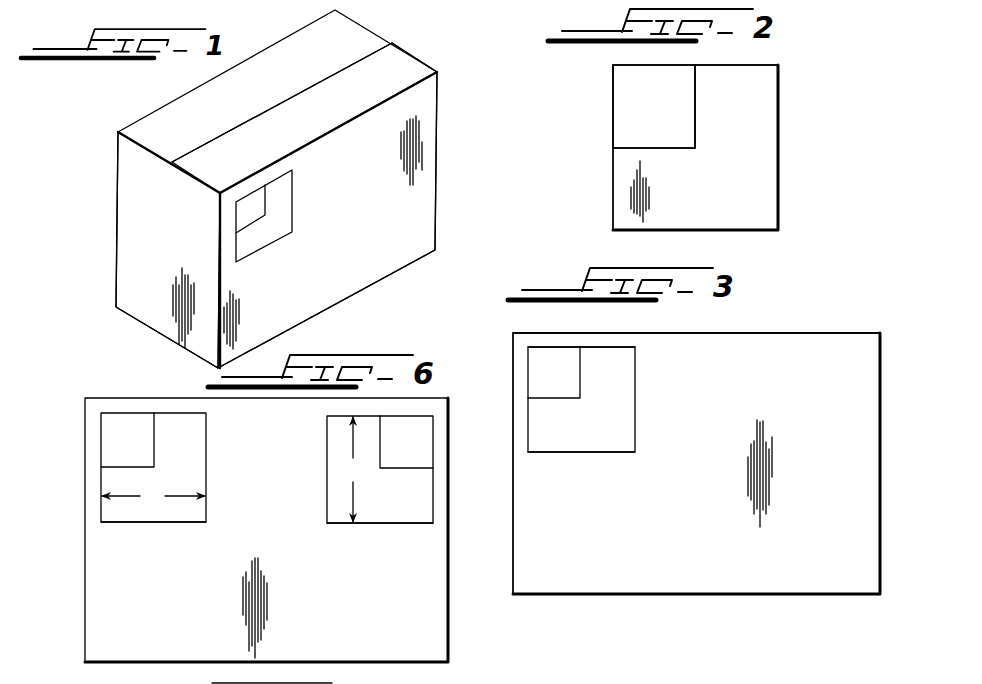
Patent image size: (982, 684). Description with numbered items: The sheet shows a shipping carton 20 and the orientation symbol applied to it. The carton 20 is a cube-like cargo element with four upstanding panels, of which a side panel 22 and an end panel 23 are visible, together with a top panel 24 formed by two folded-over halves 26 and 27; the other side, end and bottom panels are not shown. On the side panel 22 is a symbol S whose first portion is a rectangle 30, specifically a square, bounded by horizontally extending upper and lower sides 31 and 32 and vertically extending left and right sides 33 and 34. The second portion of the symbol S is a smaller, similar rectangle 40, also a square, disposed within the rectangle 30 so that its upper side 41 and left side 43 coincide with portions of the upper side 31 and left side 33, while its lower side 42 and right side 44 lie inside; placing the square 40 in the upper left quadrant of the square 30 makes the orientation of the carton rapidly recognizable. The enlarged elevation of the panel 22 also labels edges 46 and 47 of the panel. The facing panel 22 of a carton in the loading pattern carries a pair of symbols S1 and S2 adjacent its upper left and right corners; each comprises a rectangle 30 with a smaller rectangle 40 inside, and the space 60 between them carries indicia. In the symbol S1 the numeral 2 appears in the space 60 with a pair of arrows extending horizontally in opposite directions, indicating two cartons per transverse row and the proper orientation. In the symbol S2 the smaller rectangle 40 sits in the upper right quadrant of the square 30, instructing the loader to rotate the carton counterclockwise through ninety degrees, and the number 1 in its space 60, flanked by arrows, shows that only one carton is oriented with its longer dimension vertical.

In FIG. 1, the carton 20 is at (463, 101).
In FIG. 3, the carton 20 is at (850, 331).
In FIG. 1, the side panel 22 is at (396, 258).
In FIG. 3, the side panel 22 is at (849, 462).
In FIG. 6, the side panel 22 is at (399, 632).
In FIG. 1, the end panel 23 is at (175, 254).
In FIG. 1, the top panel 24 is at (347, 108).
In FIG. 1, the folded-over half 26 is at (403, 63).
In FIG. 1, the folded-over half 27 is at (356, 30).
In FIG. 1, the rectangle 30 is at (267, 250).
In FIG. 2, the rectangle 30 is at (781, 204).
In FIG. 3, the rectangle 30 is at (581, 399).
In FIG. 6, the rectangle 30 is at (208, 485).
In FIG. 2, the upper side 31 is at (712, 65).
In FIG. 3, the upper side 31 is at (604, 348).
In FIG. 2, the lower side 32 is at (713, 232).
In FIG. 3, the lower side 32 is at (572, 452).
In FIG. 2, the left side 33 is at (613, 190).
In FIG. 2, the right side 34 is at (780, 151).
In FIG. 1, the rectangle 40 is at (268, 221).
In FIG. 2, the rectangle 40 is at (666, 152).
In FIG. 3, the rectangle 40 is at (570, 402).
In FIG. 6, the rectangle 40 is at (158, 448).
In FIG. 2, the upper side 41 is at (660, 72).
In FIG. 2, the lower side 42 is at (648, 148).
In FIG. 2, the left side 43 is at (613, 116).
In FIG. 2, the right side 44 is at (696, 129).
In FIG. 3, the upper edge of panel 46 is at (727, 337).
In FIG. 3, the lower edge of panel 47 is at (700, 593).
In FIG. 6, the space 60 is at (132, 510).
In FIG. 1, the symbol S is at (309, 191).
In FIG. 2, the symbol S is at (803, 112).
In FIG. 3, the symbol S is at (612, 457).
In FIG. 6, the symbol S1 is at (166, 529).
In FIG. 6, the symbol S2 is at (368, 528).
In FIG. 6, the number 1 is at (359, 464).
In FIG. 6, the numeral 2 is at (153, 496).